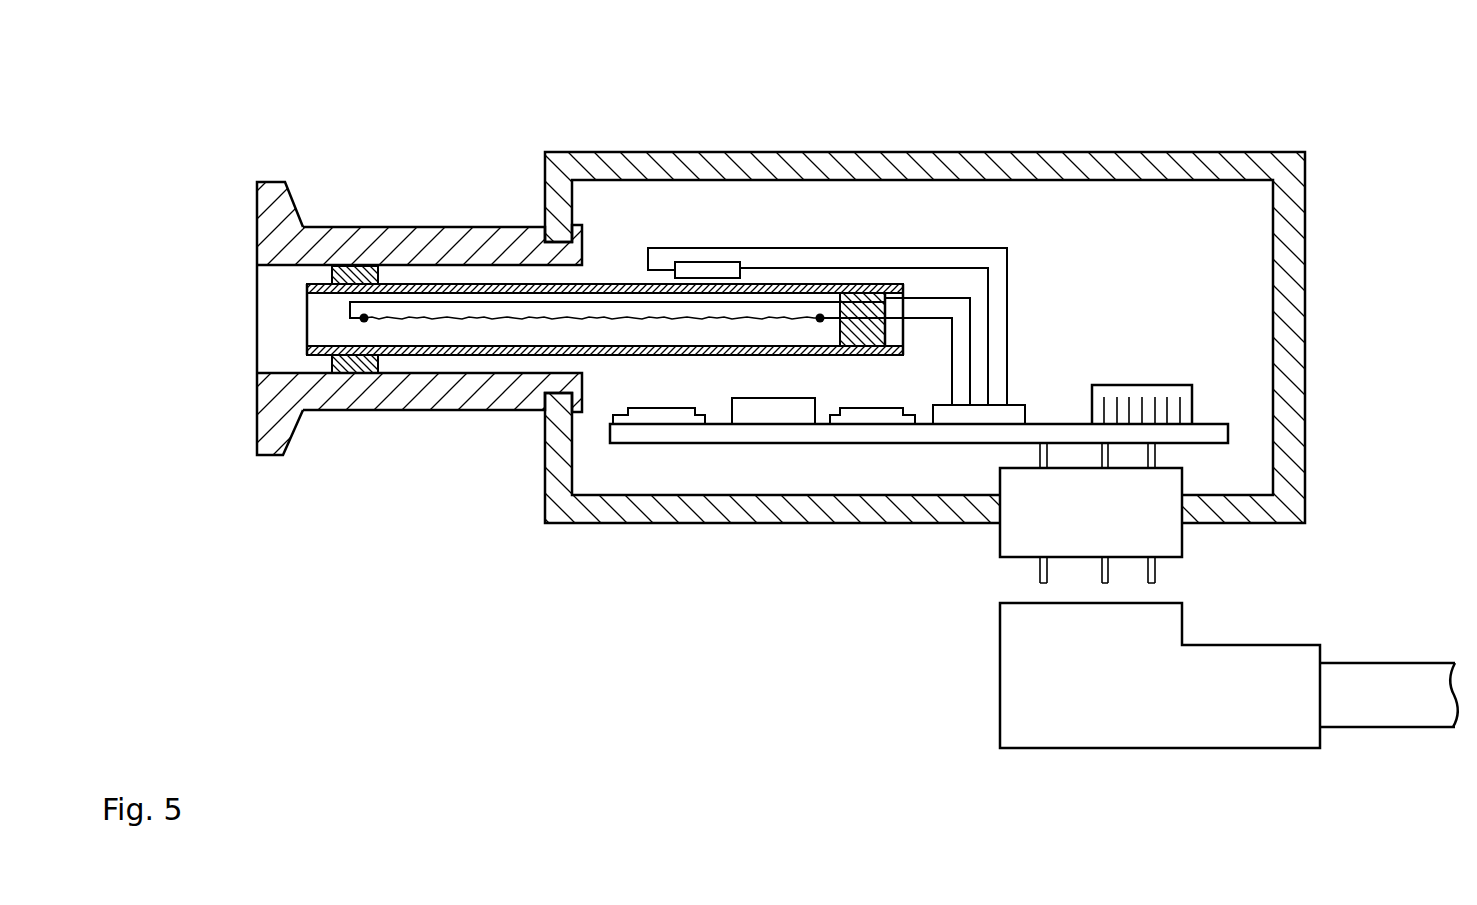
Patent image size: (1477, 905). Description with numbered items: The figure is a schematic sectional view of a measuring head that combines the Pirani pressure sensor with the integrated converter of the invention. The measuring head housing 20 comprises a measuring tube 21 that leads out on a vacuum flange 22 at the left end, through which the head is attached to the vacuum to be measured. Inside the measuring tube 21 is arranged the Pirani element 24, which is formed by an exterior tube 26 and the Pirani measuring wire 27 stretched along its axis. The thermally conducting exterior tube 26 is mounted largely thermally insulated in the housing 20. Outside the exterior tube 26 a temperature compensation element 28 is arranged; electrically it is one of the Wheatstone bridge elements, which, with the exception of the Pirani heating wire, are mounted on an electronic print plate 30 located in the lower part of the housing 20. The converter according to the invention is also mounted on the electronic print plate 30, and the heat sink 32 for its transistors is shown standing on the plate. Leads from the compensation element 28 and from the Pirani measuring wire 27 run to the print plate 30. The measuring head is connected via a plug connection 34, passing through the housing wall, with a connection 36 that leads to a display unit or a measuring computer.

The measuring head housing 20 is at (690, 128).
The measuring tube 21 is at (455, 242).
The vacuum flange 22 is at (279, 440).
The Pirani element 24 is at (407, 352).
The exterior tube 26 is at (323, 286).
The Pirani measuring wire 27 is at (482, 320).
The temperature compensation element 28 is at (727, 255).
The electronic print plate 30 is at (668, 433).
The heat sink 32 is at (1153, 385).
The plug connection 34 is at (1162, 537).
The connection 36 is at (1250, 663).